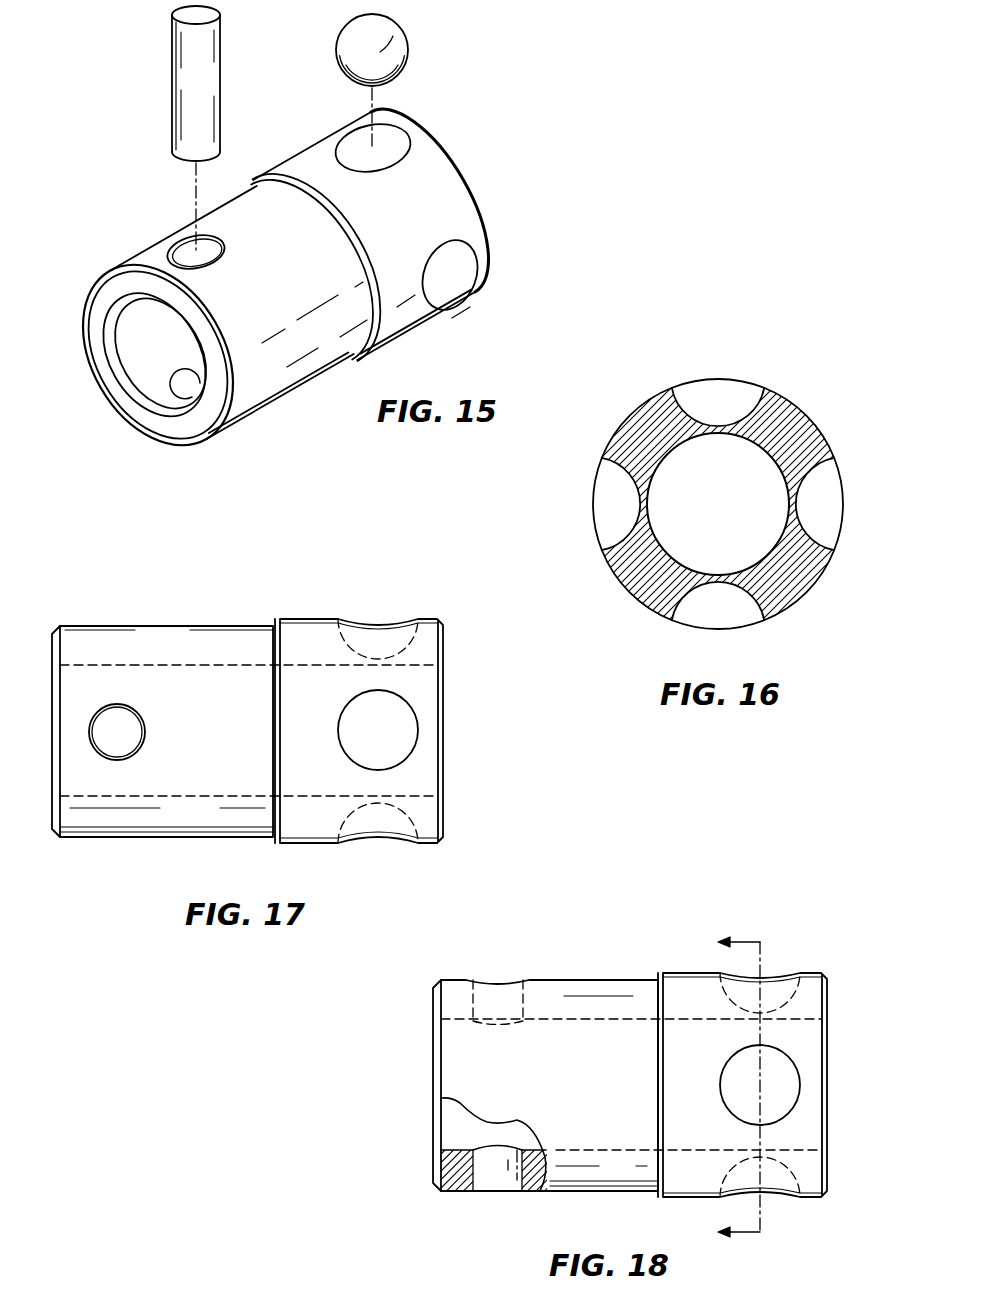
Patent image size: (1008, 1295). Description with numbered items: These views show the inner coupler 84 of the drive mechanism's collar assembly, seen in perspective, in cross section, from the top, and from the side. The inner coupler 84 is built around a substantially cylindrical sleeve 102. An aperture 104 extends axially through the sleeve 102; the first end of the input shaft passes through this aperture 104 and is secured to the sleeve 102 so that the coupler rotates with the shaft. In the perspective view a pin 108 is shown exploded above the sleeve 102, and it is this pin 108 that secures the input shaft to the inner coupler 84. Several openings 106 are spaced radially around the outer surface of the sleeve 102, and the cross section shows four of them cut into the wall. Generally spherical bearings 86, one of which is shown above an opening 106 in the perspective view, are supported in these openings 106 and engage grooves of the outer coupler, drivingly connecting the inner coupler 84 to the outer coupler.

In FIG. 15, the inner coupler 84 is at (514, 162).
In FIG. 16, the inner coupler 84 is at (636, 374).
In FIG. 17, the inner coupler 84 is at (252, 584).
In FIG. 18, the inner coupler 84 is at (635, 925).
In FIG. 15, the bearings 86 is at (388, 57).
In FIG. 15, the sleeve 102 is at (290, 375).
In FIG. 17, the sleeve 102 is at (142, 815).
In FIG. 18, the sleeve 102 is at (457, 1061).
In FIG. 15, the aperture 104 is at (147, 372).
In FIG. 16, the aperture 104 is at (672, 558).
In FIG. 18, the aperture 104 is at (457, 1150).
In FIG. 15, the openings 106 is at (395, 145).
In FIG. 16, the openings 106 is at (753, 400).
In FIG. 17, the openings 106 is at (392, 622).
In FIG. 18, the openings 106 is at (776, 973).
In FIG. 15, the pin 108 is at (191, 88).
In FIG. 17, the pin 108 is at (117, 732).
In FIG. 18, the pin 108 is at (498, 1080).